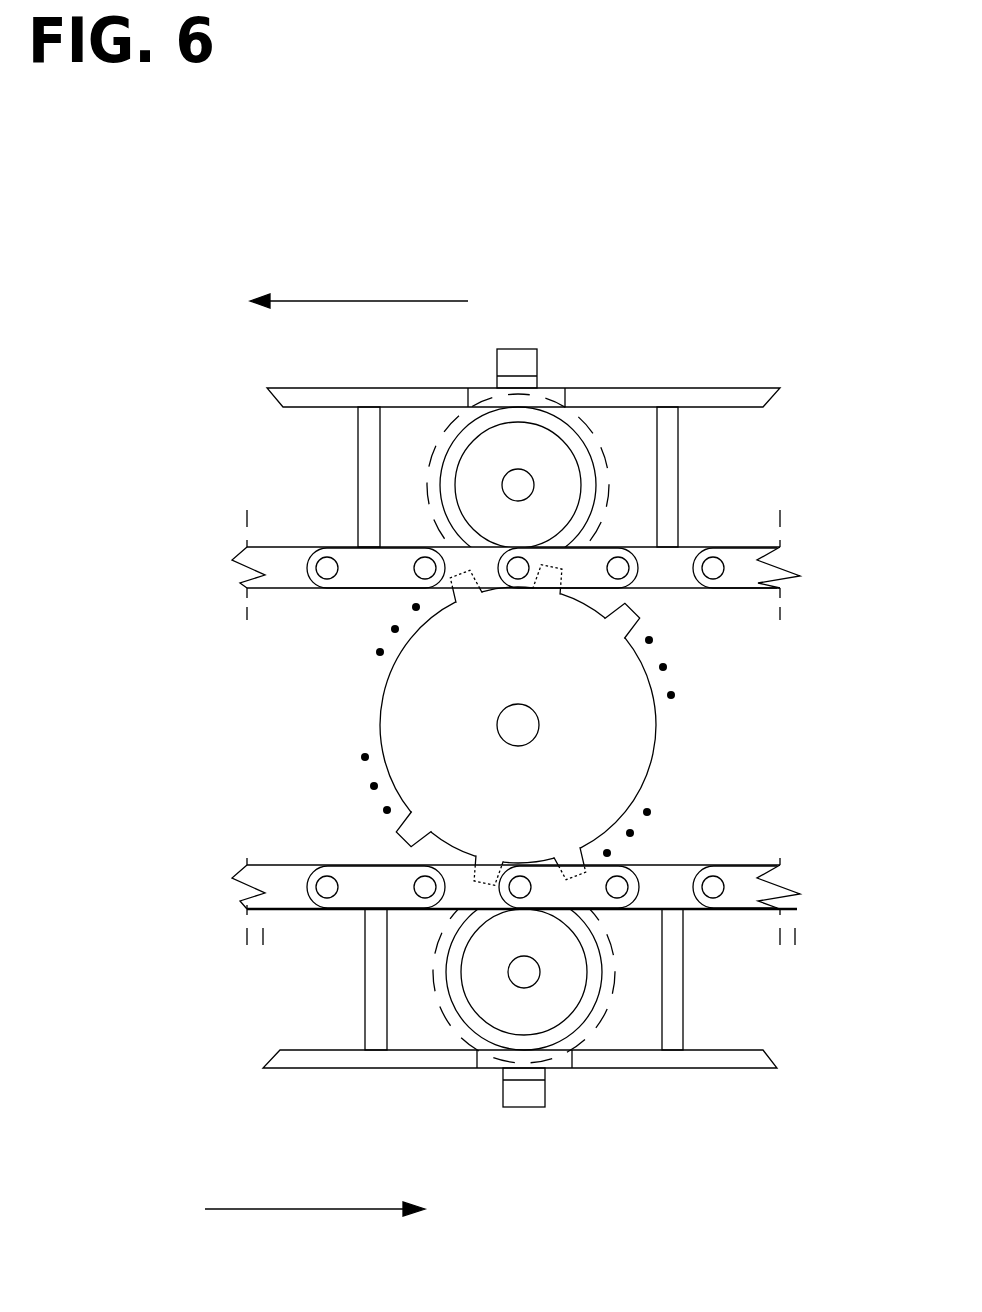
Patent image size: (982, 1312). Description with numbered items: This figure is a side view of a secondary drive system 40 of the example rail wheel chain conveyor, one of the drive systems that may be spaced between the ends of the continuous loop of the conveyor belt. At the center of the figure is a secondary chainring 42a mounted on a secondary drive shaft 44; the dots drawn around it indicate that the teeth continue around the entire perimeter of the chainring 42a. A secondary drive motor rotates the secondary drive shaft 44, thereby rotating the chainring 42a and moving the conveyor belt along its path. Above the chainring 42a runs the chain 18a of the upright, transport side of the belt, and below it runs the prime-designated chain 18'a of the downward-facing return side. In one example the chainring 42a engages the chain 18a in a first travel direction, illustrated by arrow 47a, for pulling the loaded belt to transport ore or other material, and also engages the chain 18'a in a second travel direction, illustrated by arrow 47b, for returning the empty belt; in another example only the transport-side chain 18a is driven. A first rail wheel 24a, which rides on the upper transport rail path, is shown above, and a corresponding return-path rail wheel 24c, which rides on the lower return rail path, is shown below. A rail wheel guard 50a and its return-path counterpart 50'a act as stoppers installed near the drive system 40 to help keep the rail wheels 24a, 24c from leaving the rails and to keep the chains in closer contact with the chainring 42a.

The secondary drive system 40 is at (786, 327).
The arrow (first travel direction) 47a is at (395, 301).
The arrow (second travel direction) 47b is at (352, 1209).
The rail wheel guard 50a is at (590, 387).
The rail wheel guard (return path) 50'a is at (564, 1032).
The first rail wheel 24a is at (588, 442).
The rail wheel (return path) 24c is at (578, 1027).
The chain 18a is at (733, 547).
The chain (return path) 18'a is at (532, 864).
The secondary chainring 42a is at (655, 748).
The secondary drive shaft 44 is at (537, 713).